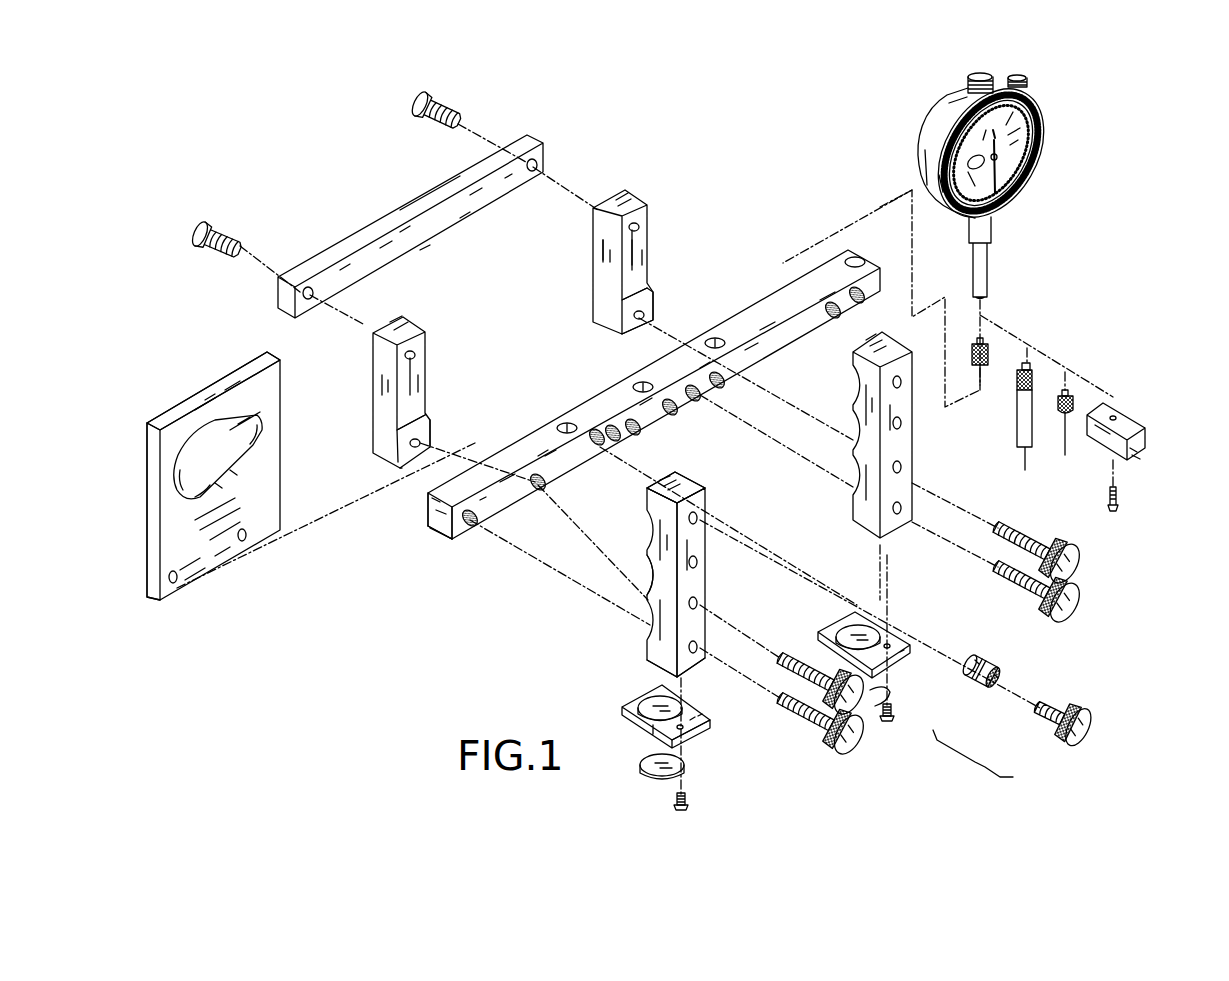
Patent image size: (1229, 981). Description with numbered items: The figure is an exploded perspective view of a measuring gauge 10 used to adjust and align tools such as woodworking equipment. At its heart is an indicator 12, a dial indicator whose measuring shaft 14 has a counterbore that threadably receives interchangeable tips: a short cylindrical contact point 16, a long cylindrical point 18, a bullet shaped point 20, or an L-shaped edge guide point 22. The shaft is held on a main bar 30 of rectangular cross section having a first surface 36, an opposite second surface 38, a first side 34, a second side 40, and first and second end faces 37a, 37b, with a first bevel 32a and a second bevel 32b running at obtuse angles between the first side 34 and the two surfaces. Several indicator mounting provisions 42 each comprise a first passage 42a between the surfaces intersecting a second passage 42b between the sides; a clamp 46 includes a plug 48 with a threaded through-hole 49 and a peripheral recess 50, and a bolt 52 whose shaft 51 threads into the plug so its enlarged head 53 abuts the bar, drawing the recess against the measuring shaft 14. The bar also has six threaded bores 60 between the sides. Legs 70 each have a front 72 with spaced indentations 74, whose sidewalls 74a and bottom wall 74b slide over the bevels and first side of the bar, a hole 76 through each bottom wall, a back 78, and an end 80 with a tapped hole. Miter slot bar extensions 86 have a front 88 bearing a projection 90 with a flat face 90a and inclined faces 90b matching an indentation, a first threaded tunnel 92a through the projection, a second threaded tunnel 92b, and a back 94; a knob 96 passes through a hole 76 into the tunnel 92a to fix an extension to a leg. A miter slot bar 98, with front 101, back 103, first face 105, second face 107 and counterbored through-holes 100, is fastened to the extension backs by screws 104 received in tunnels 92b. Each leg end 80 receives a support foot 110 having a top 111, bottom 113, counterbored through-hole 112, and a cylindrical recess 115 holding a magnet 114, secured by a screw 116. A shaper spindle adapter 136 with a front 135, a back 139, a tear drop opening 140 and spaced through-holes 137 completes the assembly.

The measuring gauge 10 is at (740, 166).
The indicator 12 is at (1012, 184).
The measuring shaft 14 is at (990, 262).
The short cylindrical contact point 16 is at (987, 385).
The long cylindrical point 18 is at (1026, 468).
The bullet shaped point 20 is at (1067, 436).
The edge guide point 22 is at (1146, 430).
The main bar 30 is at (643, 413).
The first bevel 32a is at (540, 447).
The second bevel 32b is at (448, 540).
The first side 34 is at (458, 542).
The first surface 36 is at (430, 530).
The first end face 37a is at (862, 258).
The second end face 37b is at (436, 535).
The second surface 38 is at (445, 541).
The second side 40 is at (428, 515).
The indicator mounting provision 42 is at (537, 394).
The first passage 42a is at (638, 385).
The second passage 42b is at (674, 412).
The clamp 46 is at (973, 756).
The plug 48 is at (997, 678).
The threaded through-hole 49 is at (1002, 672).
The recess 50 is at (978, 660).
The shaft 51 is at (1070, 700).
The bolt 52 is at (1077, 733).
The enlarged head 53 is at (1090, 743).
The threaded bores 60 is at (636, 432).
The legs 70 is at (707, 494).
The front 72 is at (647, 622).
The indentations 74 is at (766, 516).
The first and second sidewalls 74a is at (645, 515).
The bottom wall 74b is at (650, 510).
The holes 76 is at (698, 562).
The back 78 is at (702, 640).
The end 80 is at (700, 670).
The miter slot bar extensions 86 is at (503, 339).
The front 88 is at (640, 250).
The projection 90 is at (650, 300).
The flat face 90a is at (432, 440).
The first and second inclined faces 90b is at (412, 428).
The first threaded tunnel 92a is at (634, 314).
The second threaded tunnel 92b is at (629, 226).
The back 94 is at (592, 266).
The knob 96 is at (1090, 568).
The miter slot bar 98 is at (444, 211).
The first and second through-holes 100 is at (540, 160).
The front 101 is at (400, 240).
The back 103 is at (440, 190).
The screws 104 is at (408, 96).
The first face 105 is at (460, 218).
The second face 107 is at (540, 138).
The support foot 110 is at (769, 701).
The top 111 is at (695, 718).
The through-hole 112 is at (684, 729).
The bottom 113 is at (690, 738).
The magnet 114 is at (640, 766).
The cylindrical recess 115 is at (638, 705).
The screw 116 is at (675, 800).
The front 135 is at (223, 490).
The shaper spindle adapter 136 is at (230, 395).
The through-holes 137 is at (248, 538).
The back 139 is at (143, 550).
The opening 140 is at (190, 440).